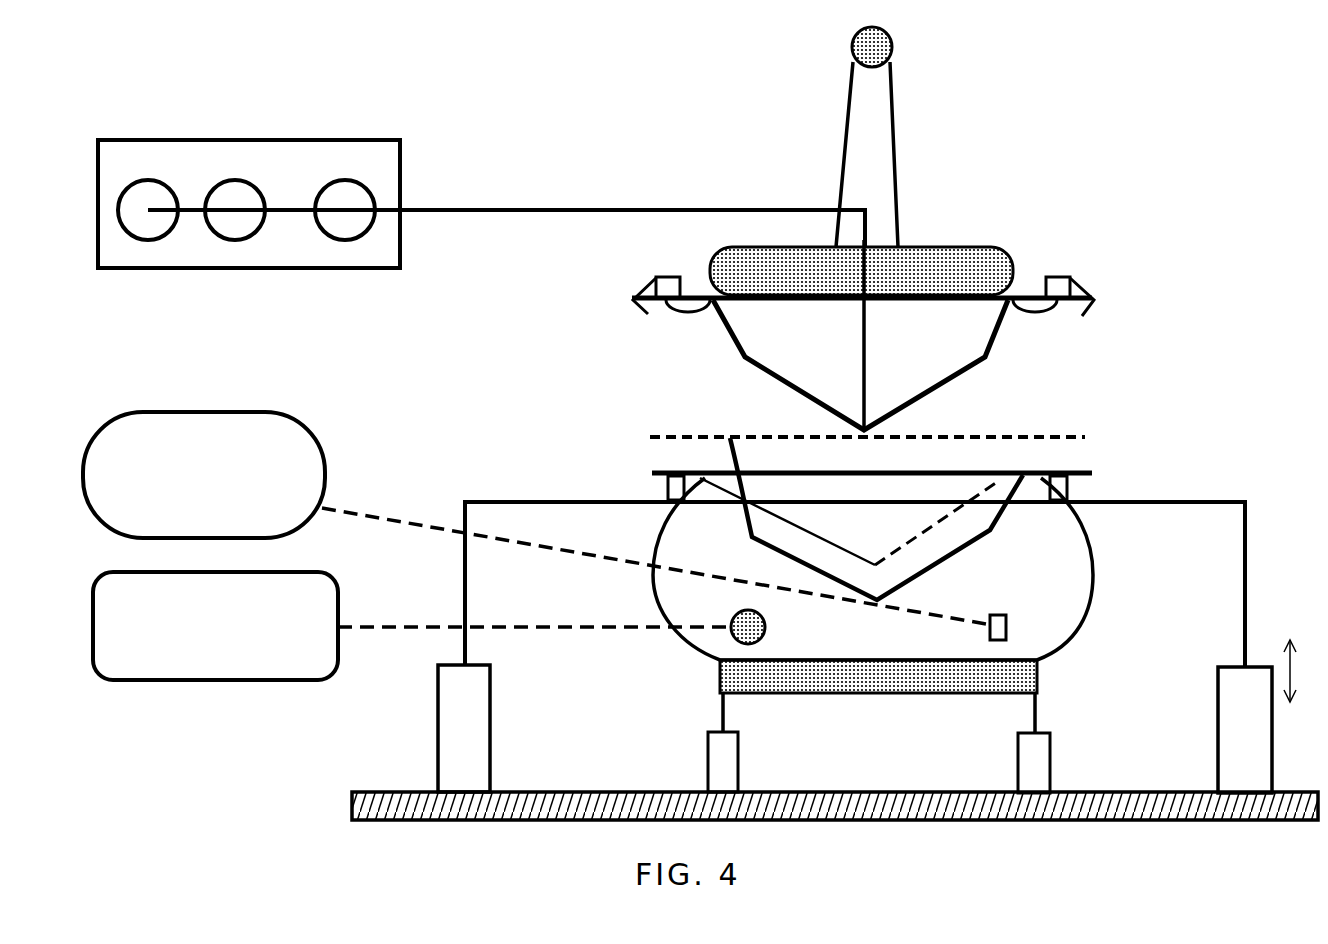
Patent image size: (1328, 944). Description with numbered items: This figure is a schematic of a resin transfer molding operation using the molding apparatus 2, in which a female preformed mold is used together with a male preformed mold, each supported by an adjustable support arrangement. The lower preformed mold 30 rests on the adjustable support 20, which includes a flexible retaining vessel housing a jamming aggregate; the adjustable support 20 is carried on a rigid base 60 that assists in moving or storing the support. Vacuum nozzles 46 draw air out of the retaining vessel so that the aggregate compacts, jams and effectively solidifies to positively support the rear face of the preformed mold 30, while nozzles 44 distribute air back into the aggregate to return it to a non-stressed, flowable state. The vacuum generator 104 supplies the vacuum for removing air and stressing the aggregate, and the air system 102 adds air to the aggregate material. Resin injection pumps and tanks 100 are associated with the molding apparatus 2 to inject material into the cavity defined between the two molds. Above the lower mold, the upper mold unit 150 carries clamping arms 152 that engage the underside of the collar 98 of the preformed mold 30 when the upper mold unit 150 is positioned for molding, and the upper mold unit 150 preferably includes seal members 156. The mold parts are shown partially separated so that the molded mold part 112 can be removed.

The molding apparatus 2 is at (516, 370).
The adjustable support 20 is at (1105, 580).
The preformed mold 30 is at (990, 557).
The nozzles 44 is at (766, 632).
The vacuum nozzles 46 is at (1000, 625).
The base 60 is at (1110, 810).
The collar 98 is at (666, 492).
The resin injection pumps and tanks 100 is at (425, 150).
The air system 102 is at (282, 668).
The vacuum generator 104 is at (275, 455).
The mold part 112 is at (1003, 462).
The upper mold unit 150 is at (700, 383).
The clamping arms 152 is at (635, 298).
The seal members 156 is at (684, 318).